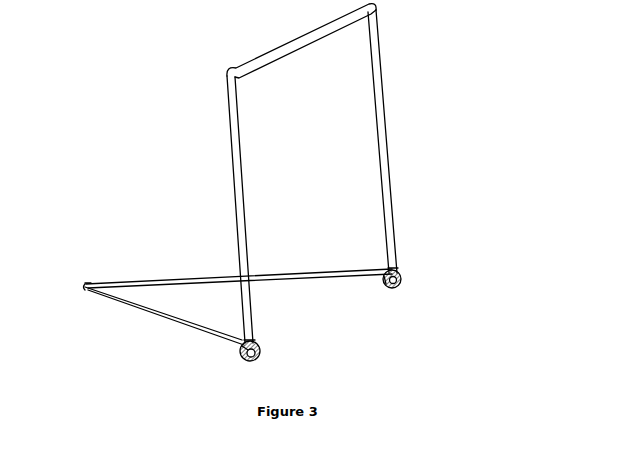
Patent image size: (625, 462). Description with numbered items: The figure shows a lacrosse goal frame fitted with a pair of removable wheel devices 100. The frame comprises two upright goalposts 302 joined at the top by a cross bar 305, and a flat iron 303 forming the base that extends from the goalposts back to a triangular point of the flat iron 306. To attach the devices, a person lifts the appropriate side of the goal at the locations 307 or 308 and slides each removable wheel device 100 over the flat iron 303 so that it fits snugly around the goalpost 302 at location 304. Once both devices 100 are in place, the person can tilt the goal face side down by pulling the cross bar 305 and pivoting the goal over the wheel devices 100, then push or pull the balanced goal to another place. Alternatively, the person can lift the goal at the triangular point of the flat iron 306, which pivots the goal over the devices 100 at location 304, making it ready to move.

The removable wheel device 100 is at (261, 350).
The goalpost 302 is at (240, 132).
The flat iron 303 is at (130, 313).
The location 304 is at (257, 338).
The cross bar 305 is at (324, 36).
The triangular point of the flat iron 306 is at (98, 283).
The lifting location 307 is at (239, 352).
The lifting location 308 is at (383, 280).